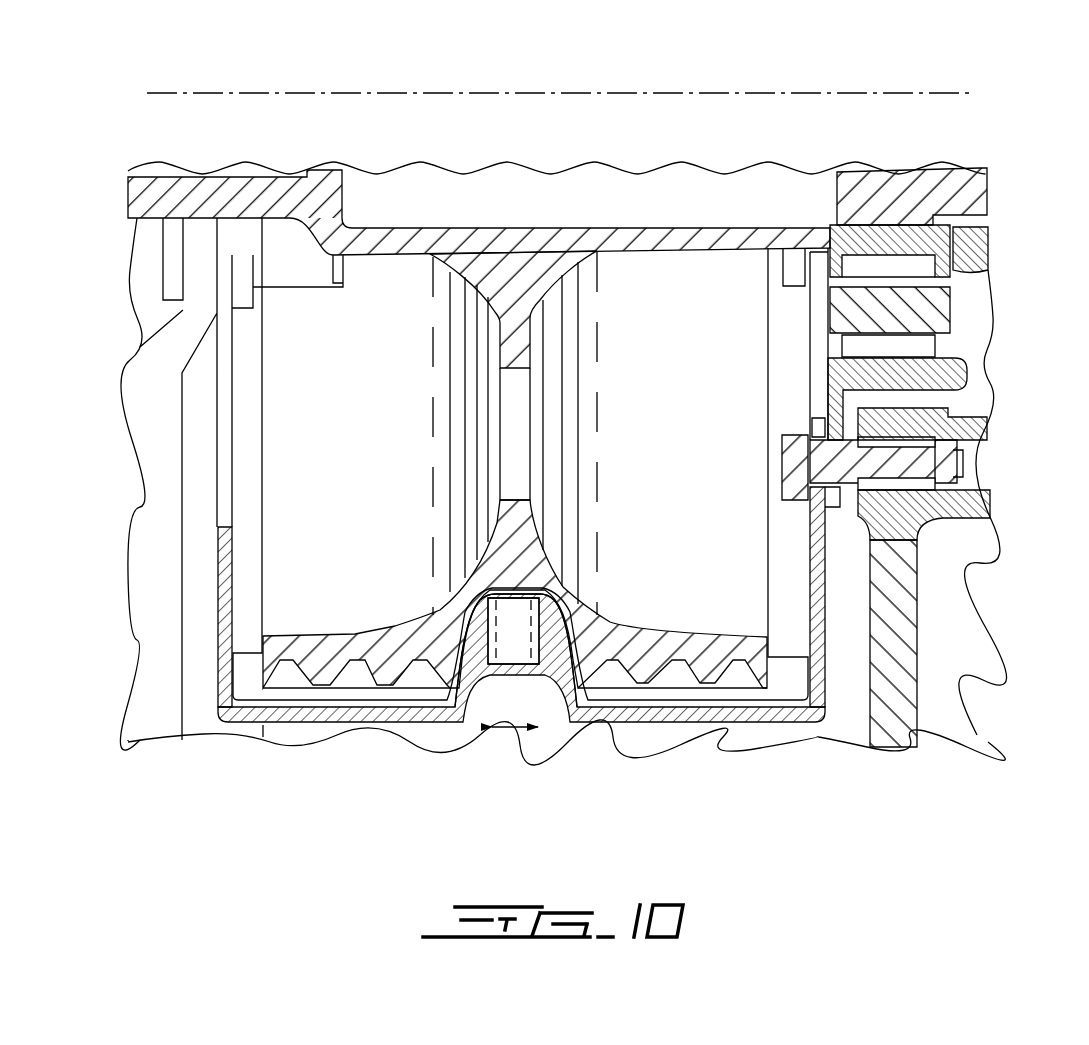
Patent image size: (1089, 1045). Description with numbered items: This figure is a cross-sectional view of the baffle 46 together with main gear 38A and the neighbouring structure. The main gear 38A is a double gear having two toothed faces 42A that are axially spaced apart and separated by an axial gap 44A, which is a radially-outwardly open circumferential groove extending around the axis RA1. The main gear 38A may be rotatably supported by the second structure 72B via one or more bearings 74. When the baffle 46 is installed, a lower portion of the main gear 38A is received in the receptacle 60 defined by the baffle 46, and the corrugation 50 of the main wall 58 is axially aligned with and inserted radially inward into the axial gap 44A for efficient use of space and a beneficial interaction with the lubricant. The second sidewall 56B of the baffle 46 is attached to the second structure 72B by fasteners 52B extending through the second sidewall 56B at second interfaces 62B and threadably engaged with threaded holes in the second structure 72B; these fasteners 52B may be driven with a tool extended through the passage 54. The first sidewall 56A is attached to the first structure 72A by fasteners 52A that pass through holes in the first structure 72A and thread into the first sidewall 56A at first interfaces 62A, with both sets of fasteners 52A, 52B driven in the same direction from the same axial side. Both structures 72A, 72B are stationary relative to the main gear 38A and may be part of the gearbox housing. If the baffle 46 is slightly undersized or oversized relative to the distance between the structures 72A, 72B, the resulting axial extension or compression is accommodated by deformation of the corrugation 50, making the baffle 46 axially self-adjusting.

The main gear 38A is at (425, 242).
The toothed faces 42A is at (362, 676).
The axial gap 44A is at (470, 742).
The baffle 46 is at (225, 712).
The corrugation 50 is at (527, 680).
The fasteners 52A is at (167, 260).
The fasteners 52B is at (797, 263).
The passage 54 is at (518, 413).
The first sidewall 56A is at (228, 425).
The second sidewall 56B is at (820, 648).
The main wall 58 is at (650, 715).
The receptacle 60 is at (245, 503).
The first interfaces 62A is at (241, 238).
The second interfaces 62B is at (820, 273).
The first structure 72A is at (165, 352).
The second structure 72B is at (905, 605).
The bearings 74 is at (962, 289).
The axis RA1 is at (947, 90).